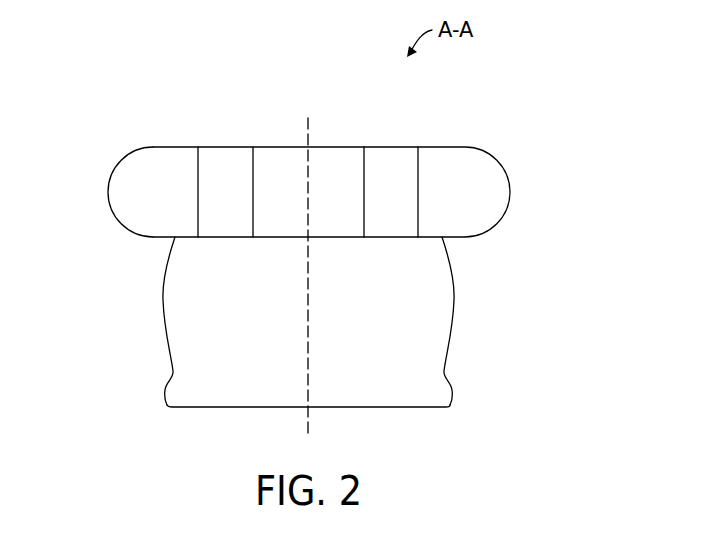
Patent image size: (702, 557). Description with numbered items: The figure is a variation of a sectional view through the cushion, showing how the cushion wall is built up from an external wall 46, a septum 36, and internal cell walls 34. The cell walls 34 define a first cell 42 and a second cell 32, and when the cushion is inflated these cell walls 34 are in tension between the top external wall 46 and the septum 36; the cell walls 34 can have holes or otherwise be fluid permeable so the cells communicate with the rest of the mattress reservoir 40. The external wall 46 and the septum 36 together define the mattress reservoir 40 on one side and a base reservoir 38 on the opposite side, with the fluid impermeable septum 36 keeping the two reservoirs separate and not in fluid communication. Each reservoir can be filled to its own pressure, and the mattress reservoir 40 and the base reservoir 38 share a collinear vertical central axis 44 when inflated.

The second cell 32 is at (402, 159).
The internal cell walls 34 is at (198, 198).
The septum 36 is at (395, 237).
The base reservoir 38 is at (189, 386).
The mattress reservoir 40 is at (141, 224).
The first cell 42 is at (208, 168).
The vertical central axis 44 is at (305, 132).
The external wall 46 is at (337, 147).